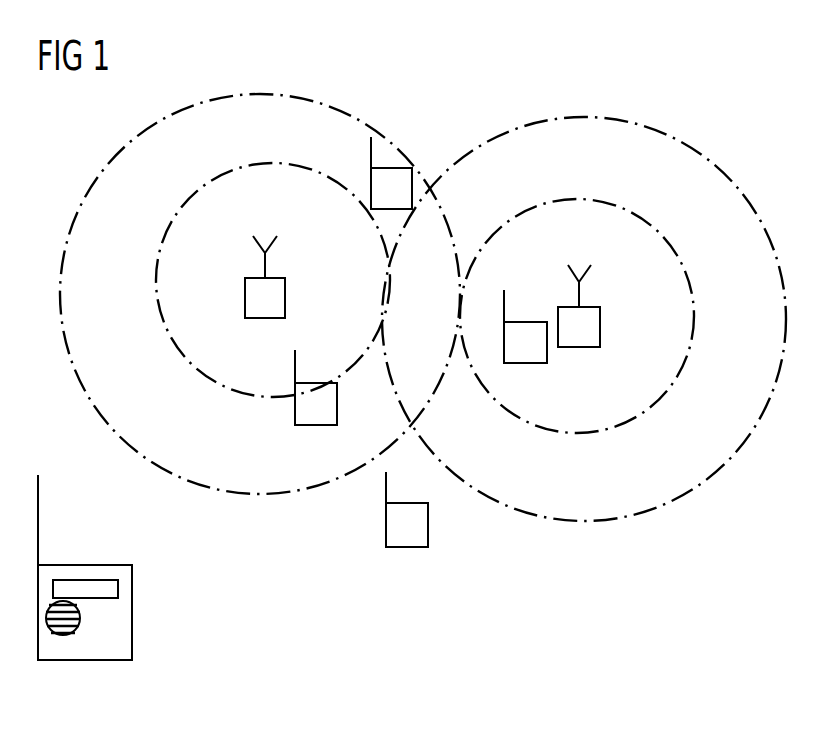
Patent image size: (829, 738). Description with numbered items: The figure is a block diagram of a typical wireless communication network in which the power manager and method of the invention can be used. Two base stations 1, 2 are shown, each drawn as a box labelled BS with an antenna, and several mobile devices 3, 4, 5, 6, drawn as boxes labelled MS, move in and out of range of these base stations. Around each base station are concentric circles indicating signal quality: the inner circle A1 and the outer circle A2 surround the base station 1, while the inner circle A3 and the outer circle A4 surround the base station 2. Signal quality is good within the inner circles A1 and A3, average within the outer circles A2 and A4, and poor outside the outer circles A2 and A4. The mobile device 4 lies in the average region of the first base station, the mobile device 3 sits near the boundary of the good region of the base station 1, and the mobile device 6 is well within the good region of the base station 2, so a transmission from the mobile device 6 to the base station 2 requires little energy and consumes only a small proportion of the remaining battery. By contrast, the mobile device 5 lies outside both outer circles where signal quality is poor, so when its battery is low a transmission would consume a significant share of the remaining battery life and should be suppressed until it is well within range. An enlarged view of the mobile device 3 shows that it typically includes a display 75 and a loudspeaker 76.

The base station 1 is at (285, 299).
The base station 2 is at (600, 327).
The mobile device 3 is at (317, 425).
The mobile device 4 is at (371, 190).
The mobile device 5 is at (405, 547).
The mobile device 6 is at (525, 363).
The display 75 is at (85, 580).
The loudspeaker 76 is at (63, 635).
The circle indicating signal quality A1 is at (282, 176).
The circle indicating signal quality A2 is at (256, 488).
The circle indicating signal quality A3 is at (587, 210).
The circle indicating signal quality A4 is at (621, 510).